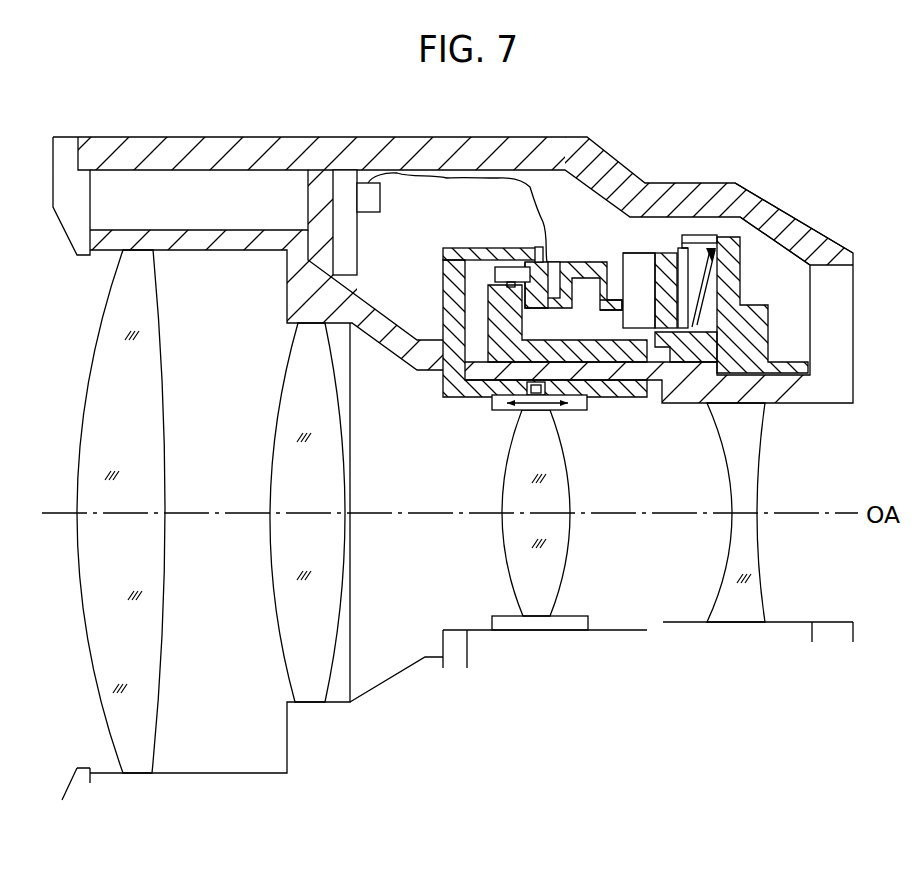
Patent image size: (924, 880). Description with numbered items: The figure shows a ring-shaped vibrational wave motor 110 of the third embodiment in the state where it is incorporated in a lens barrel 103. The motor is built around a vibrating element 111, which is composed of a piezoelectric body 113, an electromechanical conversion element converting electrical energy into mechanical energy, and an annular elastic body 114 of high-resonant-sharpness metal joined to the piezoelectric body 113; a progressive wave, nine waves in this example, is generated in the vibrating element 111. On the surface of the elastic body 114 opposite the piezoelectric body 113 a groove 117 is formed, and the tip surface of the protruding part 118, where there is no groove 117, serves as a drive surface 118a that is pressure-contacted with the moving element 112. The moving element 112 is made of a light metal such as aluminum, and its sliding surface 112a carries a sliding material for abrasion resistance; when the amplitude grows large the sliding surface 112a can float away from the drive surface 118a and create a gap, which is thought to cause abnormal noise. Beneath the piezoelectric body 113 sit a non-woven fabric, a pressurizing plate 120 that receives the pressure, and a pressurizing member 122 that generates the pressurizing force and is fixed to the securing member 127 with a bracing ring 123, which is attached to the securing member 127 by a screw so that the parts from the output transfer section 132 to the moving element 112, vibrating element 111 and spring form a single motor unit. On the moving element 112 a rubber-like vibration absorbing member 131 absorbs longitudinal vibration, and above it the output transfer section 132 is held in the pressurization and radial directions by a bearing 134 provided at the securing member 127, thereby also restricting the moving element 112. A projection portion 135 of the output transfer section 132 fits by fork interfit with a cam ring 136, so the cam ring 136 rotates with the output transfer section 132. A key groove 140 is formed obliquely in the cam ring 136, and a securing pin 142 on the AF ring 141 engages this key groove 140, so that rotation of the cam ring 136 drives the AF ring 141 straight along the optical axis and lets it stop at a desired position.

The lens barrel 103 is at (244, 116).
The vibrational wave motor 110 is at (413, 226).
The vibrating element 111 is at (697, 197).
The moving element 112 is at (577, 262).
The sliding surface 112a is at (622, 307).
The piezoelectric body 113 is at (685, 247).
The elastic body 114 is at (663, 242).
The groove 117 is at (658, 345).
The protruding part 118 is at (634, 270).
The drive surface 118a is at (622, 258).
The pressurizing plate 120 is at (693, 235).
The pressurizing member 122 is at (732, 263).
The bracing ring 123 is at (767, 227).
The securing member 127 is at (696, 330).
The vibration absorbing member 131 is at (557, 262).
The output transfer section 132 is at (518, 249).
The bearing 134 is at (495, 273).
The projection portion 135 is at (539, 247).
The cam ring 136 is at (472, 385).
The key groove 140 is at (533, 393).
The AF ring 141 is at (578, 410).
The securing pin 142 is at (538, 408).